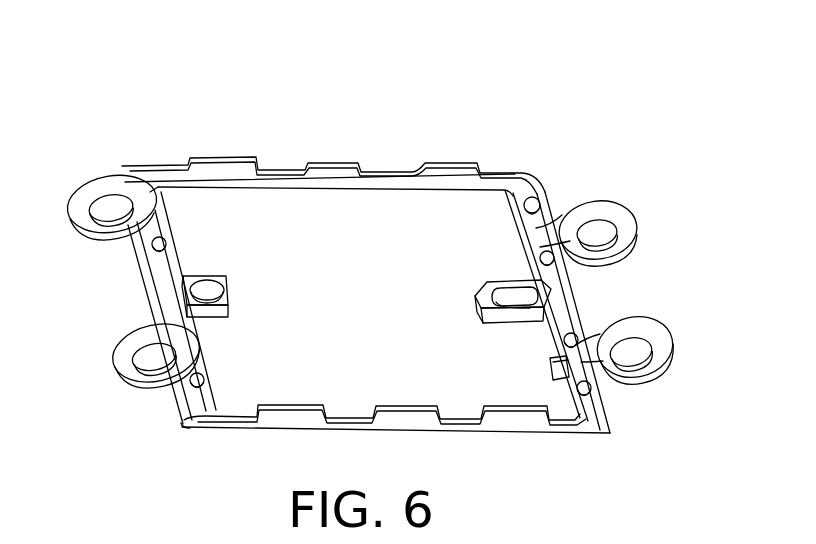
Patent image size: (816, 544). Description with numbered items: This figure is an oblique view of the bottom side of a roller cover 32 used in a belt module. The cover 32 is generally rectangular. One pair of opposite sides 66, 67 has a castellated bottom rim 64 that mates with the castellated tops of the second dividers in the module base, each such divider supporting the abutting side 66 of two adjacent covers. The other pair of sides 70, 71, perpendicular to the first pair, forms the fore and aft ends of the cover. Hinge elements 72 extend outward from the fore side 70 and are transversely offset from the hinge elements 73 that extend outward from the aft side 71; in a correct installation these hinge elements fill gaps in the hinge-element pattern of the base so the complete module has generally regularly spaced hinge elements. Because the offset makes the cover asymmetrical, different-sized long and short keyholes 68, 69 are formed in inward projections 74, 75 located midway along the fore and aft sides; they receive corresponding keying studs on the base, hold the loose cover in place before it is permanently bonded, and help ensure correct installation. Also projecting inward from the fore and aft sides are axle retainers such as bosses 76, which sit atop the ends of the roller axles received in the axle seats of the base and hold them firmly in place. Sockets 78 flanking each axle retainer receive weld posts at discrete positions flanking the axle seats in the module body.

The cover 32 is at (591, 116).
The castellated bottom rim 64 is at (423, 165).
The side 66 is at (280, 423).
The side 67 is at (163, 165).
The long keyhole 68 is at (507, 305).
The short keyhole 69 is at (200, 297).
The fore side 70 is at (562, 298).
The aft side 71 is at (167, 297).
The hinge elements 72 is at (643, 367).
The hinge elements 73 is at (167, 380).
The inward projection 74 is at (502, 320).
The inward projection 75 is at (220, 313).
The bosses 76 is at (563, 363).
The sockets 78 is at (538, 203).